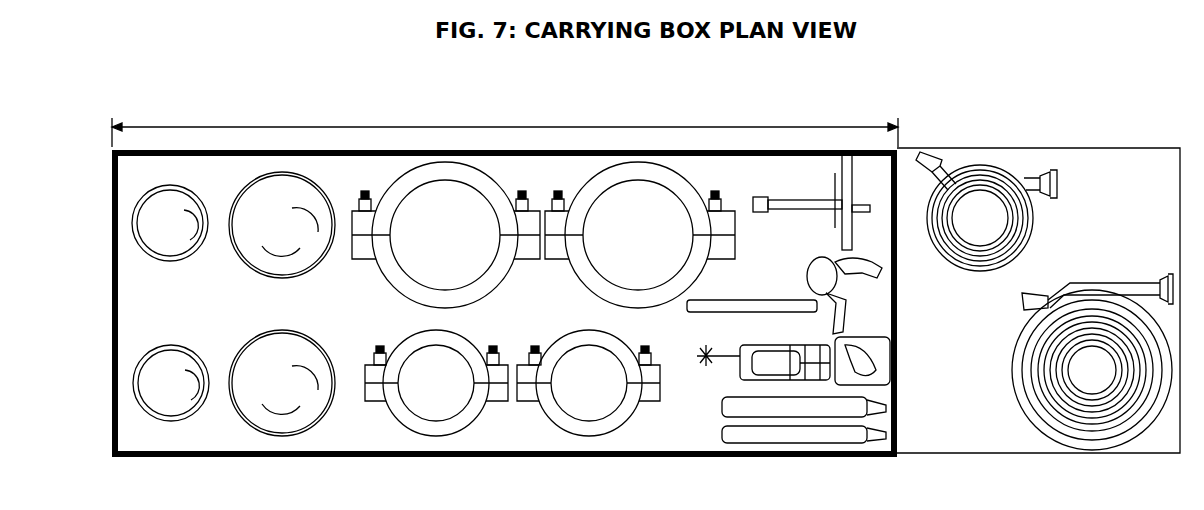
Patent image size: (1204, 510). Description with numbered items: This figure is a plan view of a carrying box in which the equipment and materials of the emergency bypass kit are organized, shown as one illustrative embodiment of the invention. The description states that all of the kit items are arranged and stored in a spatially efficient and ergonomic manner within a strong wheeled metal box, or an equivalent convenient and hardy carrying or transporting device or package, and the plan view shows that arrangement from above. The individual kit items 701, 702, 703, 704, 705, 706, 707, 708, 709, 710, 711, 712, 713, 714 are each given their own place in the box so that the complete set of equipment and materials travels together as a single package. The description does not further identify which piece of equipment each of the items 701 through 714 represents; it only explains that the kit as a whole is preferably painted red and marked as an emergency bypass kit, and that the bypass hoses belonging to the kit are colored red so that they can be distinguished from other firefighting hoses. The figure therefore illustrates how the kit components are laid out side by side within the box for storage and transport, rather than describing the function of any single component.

The small coupling 701 is at (170, 223).
The large coupling 702 is at (282, 225).
The small coupling 703 is at (171, 383).
The large coupling 704 is at (282, 383).
The large pipe clamp 705 is at (446, 235).
The large pipe clamp 706 is at (640, 235).
The small pipe clamp 707 is at (436, 383).
The small pipe clamp 708 is at (588, 383).
The T-handle tool 709 is at (811, 202).
The pipe wrench 710 is at (784, 295).
The bar tool 711 is at (781, 398).
The bar tool 712 is at (781, 433).
The small hose reel 713 is at (986, 228).
The large hose reel 714 is at (1092, 353).